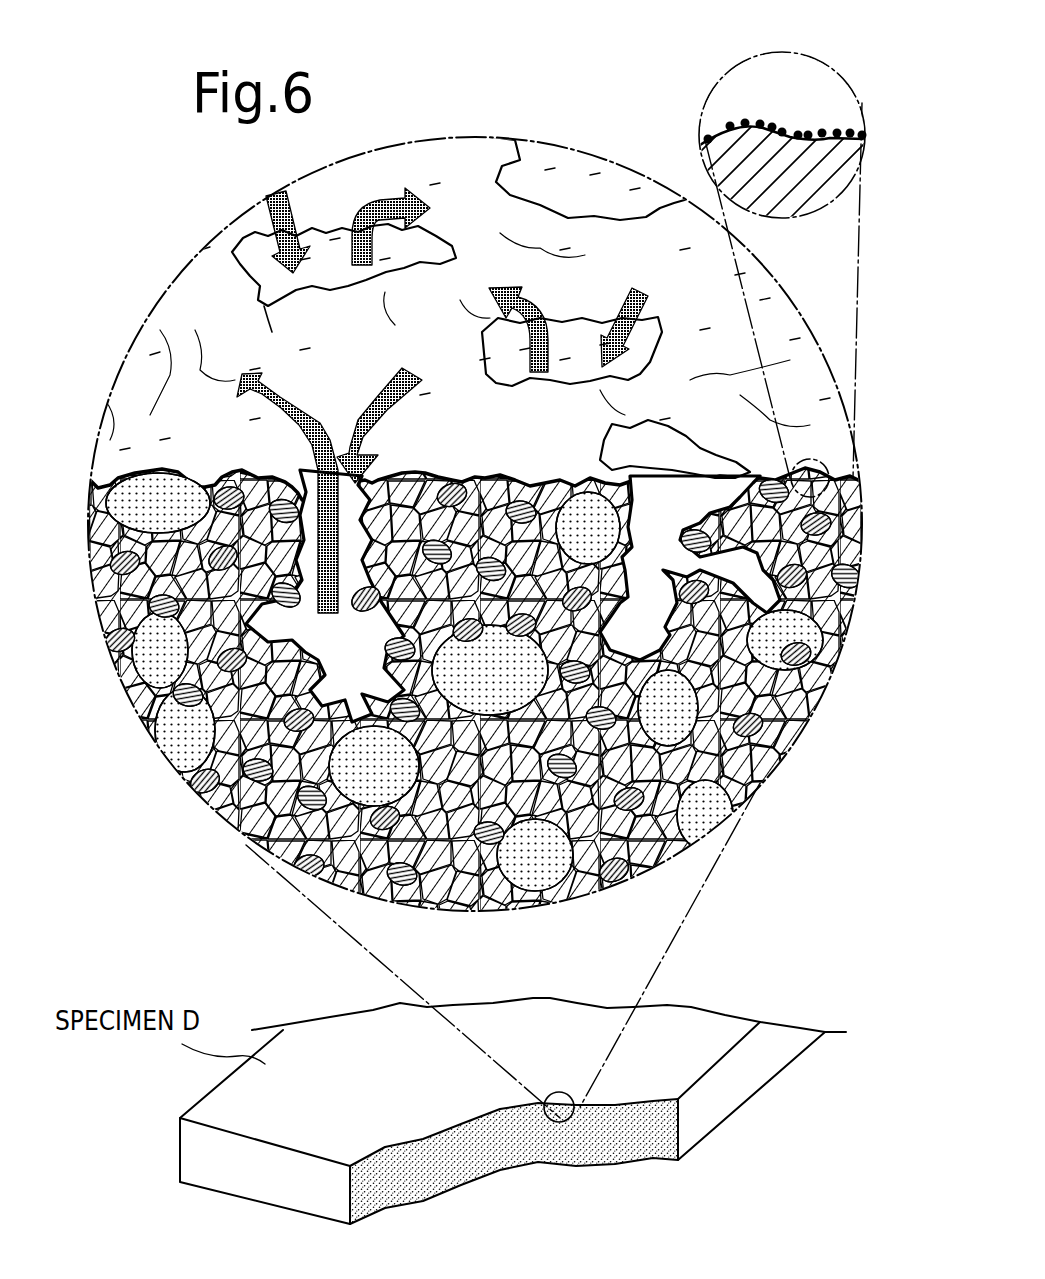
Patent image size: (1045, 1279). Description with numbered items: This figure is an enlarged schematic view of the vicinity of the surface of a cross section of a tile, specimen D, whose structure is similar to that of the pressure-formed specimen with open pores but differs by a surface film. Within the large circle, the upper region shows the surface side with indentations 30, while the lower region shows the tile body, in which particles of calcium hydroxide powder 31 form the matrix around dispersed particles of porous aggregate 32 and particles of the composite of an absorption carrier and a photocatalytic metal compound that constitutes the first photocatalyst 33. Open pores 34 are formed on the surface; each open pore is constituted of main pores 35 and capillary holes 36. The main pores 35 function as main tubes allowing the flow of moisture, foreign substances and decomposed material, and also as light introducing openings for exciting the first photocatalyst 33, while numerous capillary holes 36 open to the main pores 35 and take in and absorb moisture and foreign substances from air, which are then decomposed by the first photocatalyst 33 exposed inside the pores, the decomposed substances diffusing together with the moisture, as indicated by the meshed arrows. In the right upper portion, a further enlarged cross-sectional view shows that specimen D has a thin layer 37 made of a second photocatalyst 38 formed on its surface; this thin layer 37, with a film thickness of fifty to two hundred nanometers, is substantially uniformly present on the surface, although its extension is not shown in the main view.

The indentation 30 is at (467, 307).
The particle of calcium hydroxide powder 31 is at (452, 492).
The particle of porous aggregate 32 is at (250, 470).
The particle of a composite of an absorption carrier and metal compound (first photo 33 is at (413, 487).
The open pore 34 is at (343, 217).
The main pore 35 is at (642, 563).
The capillary hole 36 is at (521, 500).
The thin layer 37 is at (735, 99).
The second photocatalyst 38 is at (772, 124).